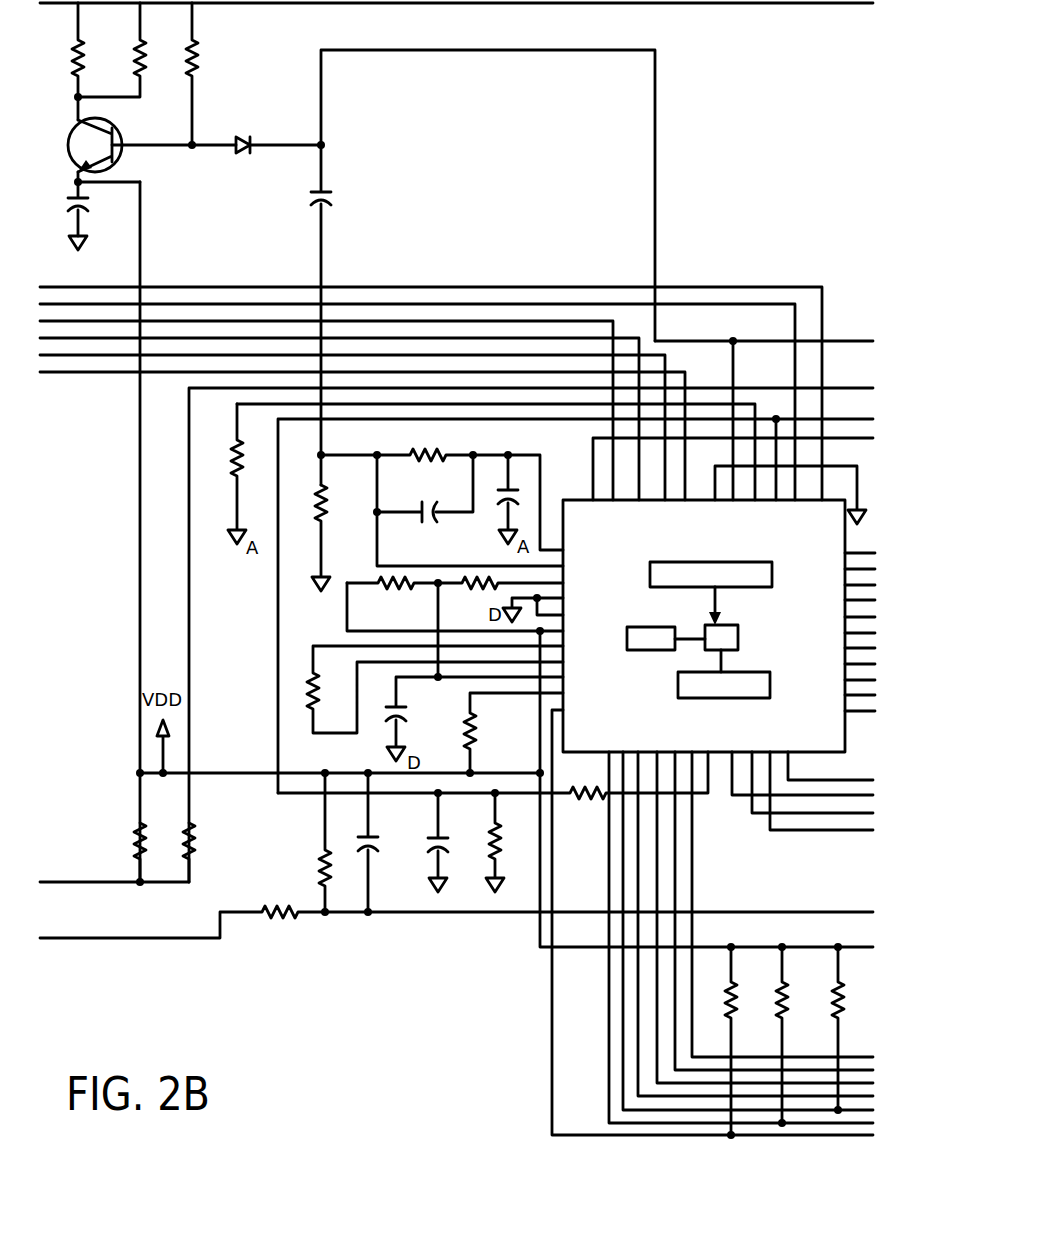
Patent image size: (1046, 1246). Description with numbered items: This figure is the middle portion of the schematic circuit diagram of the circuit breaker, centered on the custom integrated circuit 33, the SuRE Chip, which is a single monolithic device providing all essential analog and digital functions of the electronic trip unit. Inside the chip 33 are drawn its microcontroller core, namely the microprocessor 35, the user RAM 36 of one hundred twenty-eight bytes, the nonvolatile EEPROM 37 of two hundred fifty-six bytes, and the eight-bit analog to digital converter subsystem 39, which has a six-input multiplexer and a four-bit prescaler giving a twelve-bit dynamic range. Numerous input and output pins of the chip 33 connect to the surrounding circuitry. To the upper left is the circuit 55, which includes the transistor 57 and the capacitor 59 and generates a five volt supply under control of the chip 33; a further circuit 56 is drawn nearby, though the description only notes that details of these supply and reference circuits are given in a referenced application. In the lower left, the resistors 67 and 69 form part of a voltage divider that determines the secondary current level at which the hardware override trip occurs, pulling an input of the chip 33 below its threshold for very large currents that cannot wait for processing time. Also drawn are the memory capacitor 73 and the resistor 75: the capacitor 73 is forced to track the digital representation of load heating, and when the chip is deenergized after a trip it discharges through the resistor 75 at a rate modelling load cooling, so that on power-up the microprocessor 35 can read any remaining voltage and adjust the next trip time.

The custom integrated circuit 33 is at (724, 634).
The microprocessor 35 is at (710, 625).
The user RAM 36 is at (655, 627).
The EEPROM 37 is at (739, 672).
The analog to digital converter subsystem 39 is at (730, 562).
The circuit 55 is at (167, 164).
The reference circuit 56 is at (312, 602).
The transistor 57 is at (121, 126).
The capacitor 59 is at (93, 202).
The resistor 67 is at (138, 822).
The resistor 69 is at (192, 827).
The memory capacitor 73 is at (483, 823).
The resistor 75 is at (500, 836).